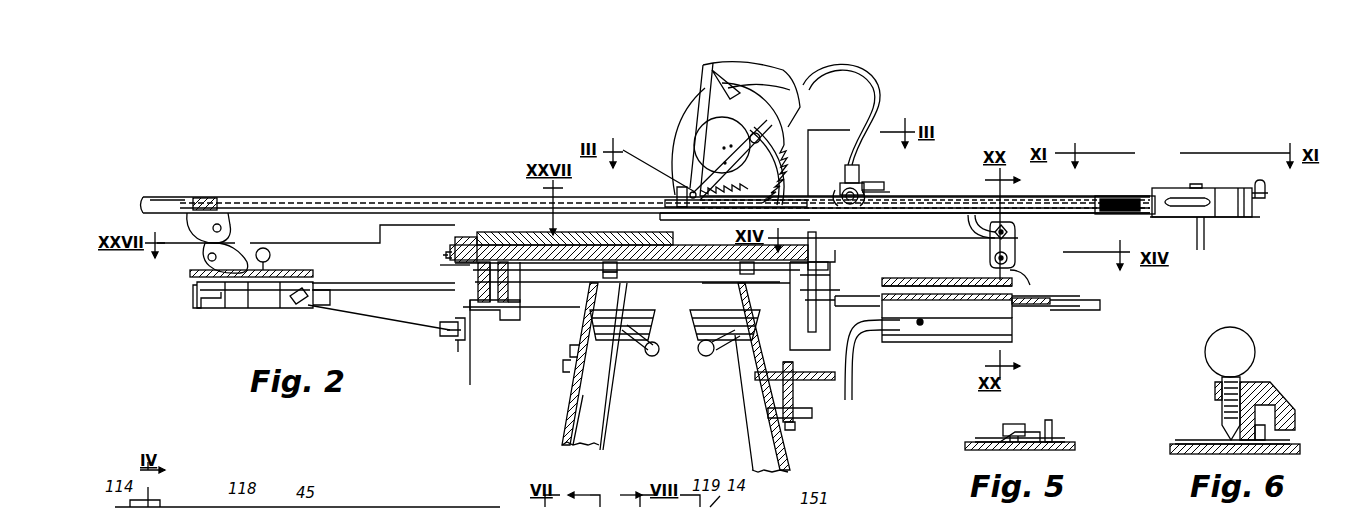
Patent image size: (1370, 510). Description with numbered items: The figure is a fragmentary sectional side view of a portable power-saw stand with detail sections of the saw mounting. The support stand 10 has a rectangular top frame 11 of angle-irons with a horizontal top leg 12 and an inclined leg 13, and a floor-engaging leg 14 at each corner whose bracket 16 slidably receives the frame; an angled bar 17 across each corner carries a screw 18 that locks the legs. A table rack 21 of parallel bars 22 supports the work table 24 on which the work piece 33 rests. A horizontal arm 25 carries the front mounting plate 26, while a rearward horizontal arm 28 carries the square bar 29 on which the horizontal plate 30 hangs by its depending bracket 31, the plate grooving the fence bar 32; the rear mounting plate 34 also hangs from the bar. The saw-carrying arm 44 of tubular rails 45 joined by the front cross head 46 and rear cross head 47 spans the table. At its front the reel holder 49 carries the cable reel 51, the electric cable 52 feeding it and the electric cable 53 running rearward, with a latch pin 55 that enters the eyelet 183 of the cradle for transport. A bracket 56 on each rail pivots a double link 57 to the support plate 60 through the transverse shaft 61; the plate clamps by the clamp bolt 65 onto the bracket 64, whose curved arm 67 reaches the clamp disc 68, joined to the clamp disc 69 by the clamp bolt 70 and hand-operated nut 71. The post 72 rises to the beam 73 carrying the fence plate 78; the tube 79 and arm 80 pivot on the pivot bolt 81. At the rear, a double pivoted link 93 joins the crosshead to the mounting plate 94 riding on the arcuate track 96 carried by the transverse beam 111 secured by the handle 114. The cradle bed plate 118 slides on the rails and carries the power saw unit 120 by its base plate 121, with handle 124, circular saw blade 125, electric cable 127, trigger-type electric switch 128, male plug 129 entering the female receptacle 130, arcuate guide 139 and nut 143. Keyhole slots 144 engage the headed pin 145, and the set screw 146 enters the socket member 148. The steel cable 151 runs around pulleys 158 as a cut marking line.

In FIG. 2, the support stand 10 is at (562, 441).
In FIG. 2, the top frame 11 is at (575, 349).
In FIG. 2, the horizontal top leg 12 is at (603, 268).
In FIG. 2, the inclined leg 13 is at (570, 352).
In FIG. 2, the floor-engaging leg 14 is at (603, 447).
In FIG. 2, the bracket 16 is at (566, 372).
In FIG. 2, the angled bar 17 is at (600, 340).
In FIG. 2, the screw 18 is at (645, 356).
In FIG. 2, the table rack 21 is at (737, 268).
In FIG. 2, the bars 22 is at (618, 268).
In FIG. 2, the work table 24 is at (620, 245).
In FIG. 2, the horizontal arm 25 is at (720, 350).
In FIG. 2, the front mounting plate 26 is at (805, 330).
In FIG. 2, the horizontal arm 28 is at (540, 307).
In FIG. 2, the square bar 29 is at (500, 305).
In FIG. 2, the horizontal plate 30 is at (452, 256).
In FIG. 2, the depending bracket 31 is at (440, 266).
In FIG. 2, the fence bar 32 is at (462, 240).
In FIG. 2, the work piece 33 is at (490, 240).
In FIG. 2, the rear mounting plate 34 is at (458, 345).
In FIG. 2, the saw-carrying arm 44 is at (352, 197).
In FIG. 2, the rails 45 is at (315, 197).
In FIG. 2, the front cross head 46 is at (1125, 216).
In FIG. 2, the rear cross head 47 is at (206, 198).
In FIG. 2, the reel holder 49 is at (1245, 218).
In FIG. 2, the cable reel 51 is at (1230, 188).
In FIG. 2, the electric cable 52 is at (1205, 248).
In FIG. 2, the electric cable 53 is at (1073, 203).
In FIG. 2, the latch pin 55 is at (1268, 187).
In FIG. 2, the bracket 56 is at (980, 215).
In FIG. 2, the double link 57 is at (1012, 246).
In FIG. 2, the support plate 60 is at (932, 278).
In FIG. 2, the transverse shaft 61 is at (1010, 256).
In FIG. 2, the bracket 64 is at (958, 342).
In FIG. 2, the clamp bolt 65 is at (918, 326).
In FIG. 2, the curved arm 67 is at (852, 375).
In FIG. 2, the clamp disc 68 is at (825, 382).
In FIG. 2, the clamp disc 69 is at (748, 360).
In FIG. 2, the clamp bolt 70 is at (798, 430).
In FIG. 2, the hand-operated nut 71 is at (742, 420).
In FIG. 2, the post 72 is at (835, 380).
In FIG. 2, the beam 73 is at (822, 285).
In FIG. 2, the fence plate 78 is at (830, 249).
In FIG. 2, the tube 79 is at (1040, 310).
In FIG. 2, the arm 80 is at (872, 292).
In FIG. 2, the pivot bolt 81 is at (760, 322).
In FIG. 2, the double pivoted link 93 is at (207, 242).
In FIG. 2, the mounting plate 94 is at (198, 280).
In FIG. 2, the arcuate track 96 is at (312, 280).
In FIG. 2, the transverse beam 111 is at (444, 322).
In FIG. 2, the handle 114 is at (470, 372).
In FIG. 2, the bed plate 118 is at (725, 222).
In FIG. 5, the bed plate 118 is at (975, 452).
In FIG. 6, the bed plate 118 is at (1190, 454).
In FIG. 2, the power saw unit 120 is at (702, 72).
In FIG. 2, the base plate 121 is at (785, 206).
In FIG. 5, the base plate 121 is at (980, 438).
In FIG. 6, the base plate 121 is at (1188, 440).
In FIG. 2, the handle 124 is at (783, 70).
In FIG. 2, the circular saw blade 125 is at (787, 127).
In FIG. 2, the electric cable 127 is at (872, 78).
In FIG. 2, the trigger-type electric switch 128 is at (727, 74).
In FIG. 2, the male plug 129 is at (787, 170).
In FIG. 2, the female receptacle 130 is at (860, 178).
In FIG. 2, the arcuate guide 139 is at (781, 142).
In FIG. 2, the nut 143 is at (753, 133).
In FIG. 5, the keyhole slots 144 is at (1040, 430).
In FIG. 5, the headed pin 145 is at (1020, 414).
In FIG. 6, the set screw 146 is at (1255, 352).
In FIG. 6, the socket member 148 is at (1220, 440).
In FIG. 2, the steel cable 151 is at (407, 203).
In FIG. 2, the pulleys 158 is at (175, 200).
In FIG. 2, the eyelet 183 is at (885, 185).